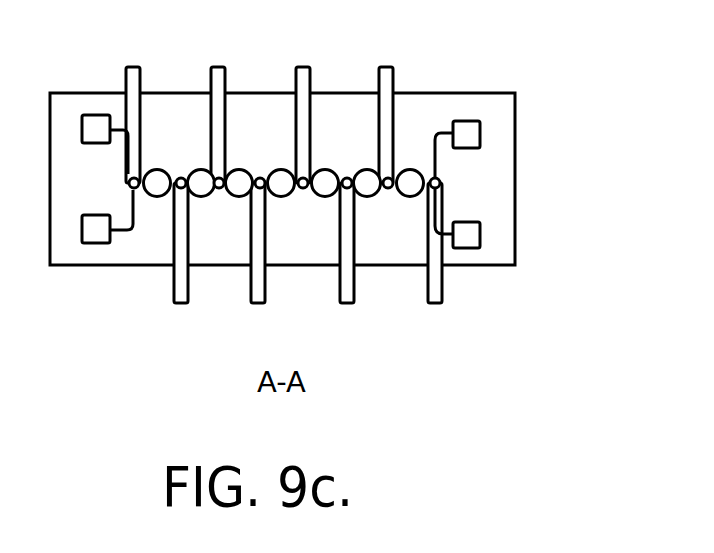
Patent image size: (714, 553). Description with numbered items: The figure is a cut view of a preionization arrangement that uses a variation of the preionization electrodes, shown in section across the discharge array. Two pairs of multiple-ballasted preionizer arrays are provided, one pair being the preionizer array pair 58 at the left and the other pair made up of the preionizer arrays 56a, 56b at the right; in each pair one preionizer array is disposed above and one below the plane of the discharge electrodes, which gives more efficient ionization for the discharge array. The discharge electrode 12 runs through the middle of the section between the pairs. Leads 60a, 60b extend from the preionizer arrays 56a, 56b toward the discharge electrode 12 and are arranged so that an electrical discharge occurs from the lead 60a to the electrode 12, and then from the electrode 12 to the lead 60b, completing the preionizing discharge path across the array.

The discharge electrode 12 is at (442, 183).
The multiple-ballasted preionizer array pair 58 is at (96, 115).
The preionizer array 56b is at (472, 122).
The lead 60b is at (441, 132).
The lead 60a is at (437, 213).
The preionizer array 56a is at (469, 249).